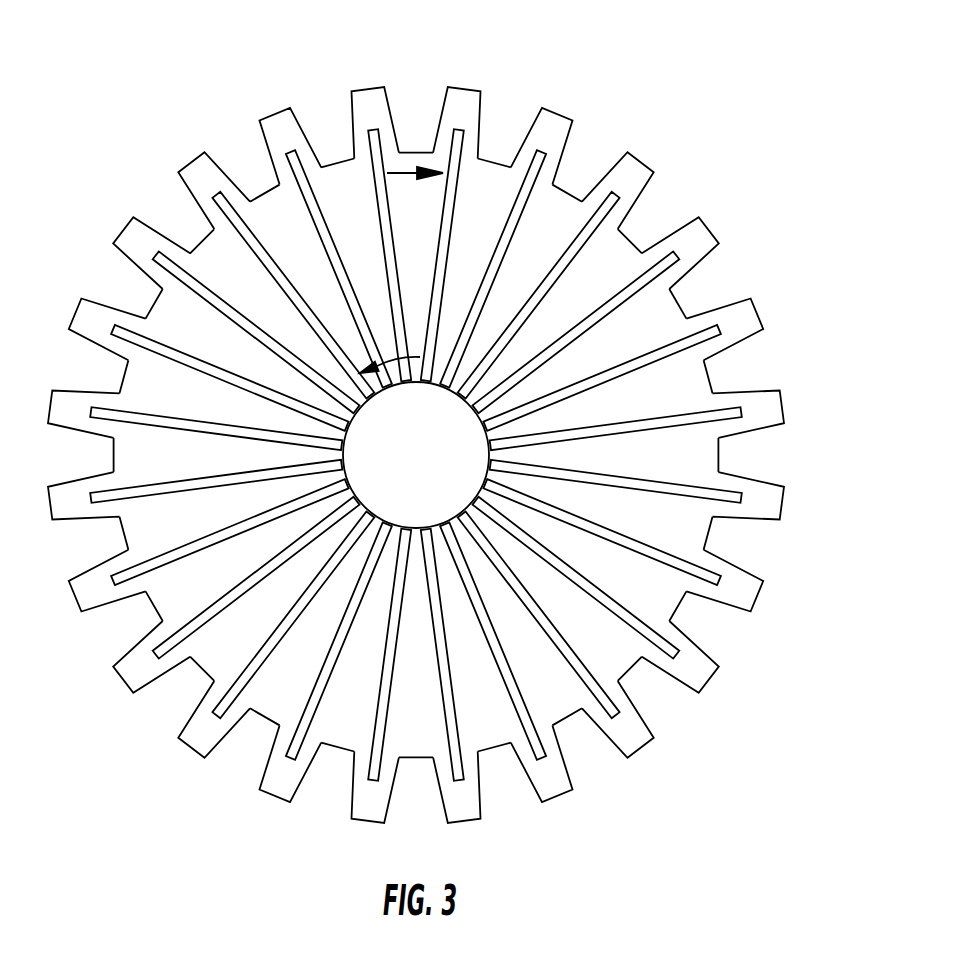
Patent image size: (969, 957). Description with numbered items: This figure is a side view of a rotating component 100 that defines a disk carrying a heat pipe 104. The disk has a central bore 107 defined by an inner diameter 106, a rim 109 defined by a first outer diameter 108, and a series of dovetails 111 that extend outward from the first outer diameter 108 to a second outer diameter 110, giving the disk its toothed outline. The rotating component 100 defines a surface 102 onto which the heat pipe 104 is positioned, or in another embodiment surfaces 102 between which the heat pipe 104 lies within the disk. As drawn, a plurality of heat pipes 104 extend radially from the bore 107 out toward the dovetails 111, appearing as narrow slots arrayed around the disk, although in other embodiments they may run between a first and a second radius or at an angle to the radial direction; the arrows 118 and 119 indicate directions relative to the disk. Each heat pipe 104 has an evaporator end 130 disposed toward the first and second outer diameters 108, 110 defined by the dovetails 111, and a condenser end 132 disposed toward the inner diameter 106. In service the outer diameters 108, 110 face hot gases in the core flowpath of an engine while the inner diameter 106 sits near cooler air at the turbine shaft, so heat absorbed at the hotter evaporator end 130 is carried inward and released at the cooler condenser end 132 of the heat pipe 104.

The rotating component 100 is at (212, 98).
The surface 102 is at (177, 312).
The heat pipe 104 is at (551, 117).
The inner diameter 106 is at (409, 510).
The bore 107 is at (348, 423).
The first outer diameter 108 is at (678, 300).
The rim 109 is at (720, 378).
The second outer diameter 110 is at (640, 160).
The dovetail 111 is at (716, 232).
The radial direction arrow 118 is at (408, 176).
The circumferential direction arrow 119 is at (410, 356).
The evaporator end 130 is at (362, 66).
The condenser end 132 is at (412, 405).